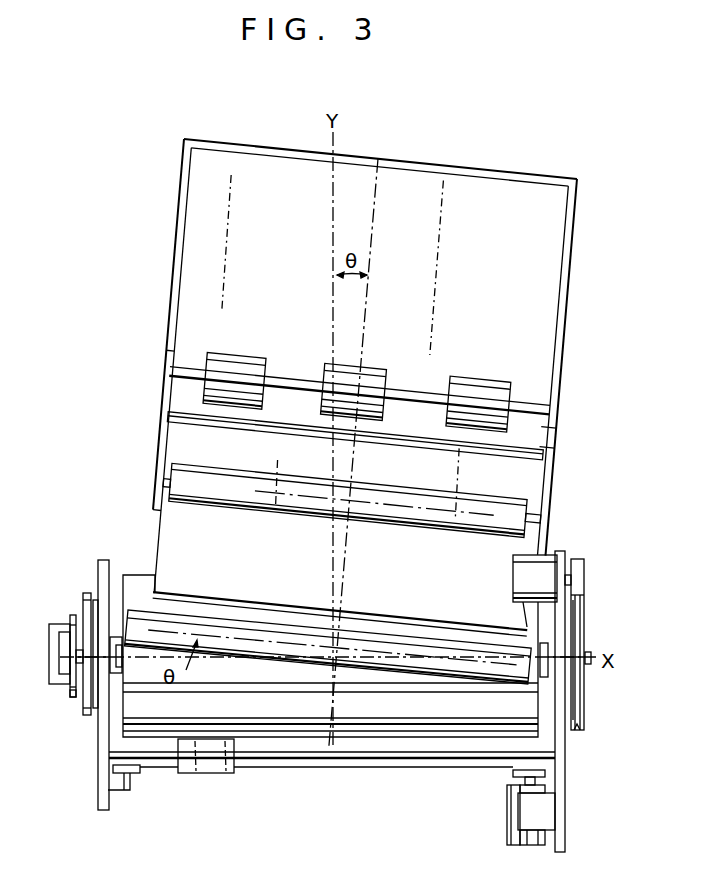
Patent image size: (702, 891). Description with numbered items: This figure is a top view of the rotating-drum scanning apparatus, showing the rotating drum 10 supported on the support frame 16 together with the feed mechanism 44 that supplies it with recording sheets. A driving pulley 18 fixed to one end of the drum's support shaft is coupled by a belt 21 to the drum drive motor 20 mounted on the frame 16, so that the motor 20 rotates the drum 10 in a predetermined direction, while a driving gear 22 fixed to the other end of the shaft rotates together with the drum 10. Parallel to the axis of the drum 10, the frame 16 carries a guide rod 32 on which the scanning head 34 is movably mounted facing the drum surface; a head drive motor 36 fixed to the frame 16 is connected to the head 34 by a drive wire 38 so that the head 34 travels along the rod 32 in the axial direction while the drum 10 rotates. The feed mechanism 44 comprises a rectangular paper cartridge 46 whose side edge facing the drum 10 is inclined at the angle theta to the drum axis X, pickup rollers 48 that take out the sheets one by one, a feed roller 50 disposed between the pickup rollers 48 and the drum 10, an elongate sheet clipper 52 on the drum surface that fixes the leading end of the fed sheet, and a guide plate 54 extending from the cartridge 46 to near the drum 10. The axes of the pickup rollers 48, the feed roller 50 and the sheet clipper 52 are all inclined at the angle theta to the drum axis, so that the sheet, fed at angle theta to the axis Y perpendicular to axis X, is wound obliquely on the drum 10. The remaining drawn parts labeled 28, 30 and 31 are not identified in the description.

The rotating drum 10 is at (410, 738).
The support frame 16 is at (101, 762).
The driving pulley 18 is at (583, 711).
The drum drive motor 20 is at (540, 570).
The belt 21 is at (580, 613).
The driving gear 22 is at (88, 597).
The hub 28 is at (68, 692).
The motor 30 is at (55, 668).
The shaft 31 is at (68, 620).
The guide rod 32 is at (345, 762).
The scanning head 34 is at (216, 767).
The head drive motor 36 is at (504, 818).
The drive wire 38 is at (283, 766).
The feed mechanism 44 is at (565, 352).
The paper cartridge 46 is at (166, 302).
The pickup rollers 48 is at (249, 371).
The feed roller 50 is at (404, 514).
The sheet clipper 52 is at (262, 648).
The guide plate 54 is at (160, 531).